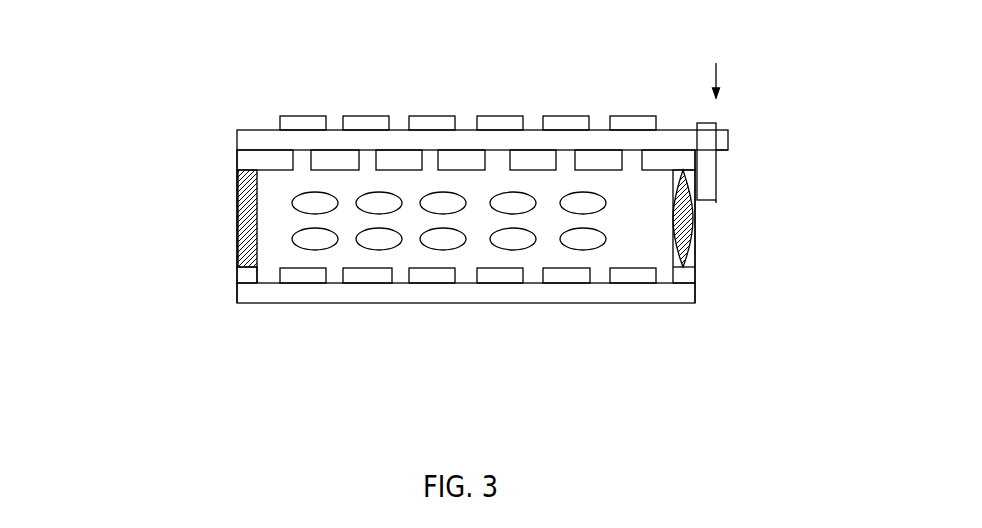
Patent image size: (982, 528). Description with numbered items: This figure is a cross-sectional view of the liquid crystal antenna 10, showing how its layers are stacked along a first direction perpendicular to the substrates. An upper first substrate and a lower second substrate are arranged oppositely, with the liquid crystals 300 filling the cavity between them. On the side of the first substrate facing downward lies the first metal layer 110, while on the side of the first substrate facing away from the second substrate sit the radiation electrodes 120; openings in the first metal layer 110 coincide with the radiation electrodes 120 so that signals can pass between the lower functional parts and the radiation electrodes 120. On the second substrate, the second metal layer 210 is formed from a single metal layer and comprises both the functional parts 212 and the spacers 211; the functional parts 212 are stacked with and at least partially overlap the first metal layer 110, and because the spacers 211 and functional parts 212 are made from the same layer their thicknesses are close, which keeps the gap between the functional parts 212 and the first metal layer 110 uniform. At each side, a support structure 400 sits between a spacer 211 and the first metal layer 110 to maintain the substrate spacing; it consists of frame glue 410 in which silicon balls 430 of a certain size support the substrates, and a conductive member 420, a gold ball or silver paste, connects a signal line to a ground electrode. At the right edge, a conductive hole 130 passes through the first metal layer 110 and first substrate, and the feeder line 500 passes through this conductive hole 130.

The liquid crystal antenna 10 is at (498, 67).
The first metal layer 110 is at (412, 147).
The radiation electrode 120 is at (376, 101).
The conductive hole 130 is at (769, 163).
The feeder line 500 is at (779, 197).
The support structure 400 is at (141, 231).
The frame glue 410 is at (177, 218).
The conductive member 420 is at (88, 172).
The silicon ball 430 is at (757, 239).
The liquid crystal 300 is at (544, 271).
The second metal layer 210 is at (466, 333).
The spacer 211 is at (299, 304).
The functional part 212 is at (278, 337).